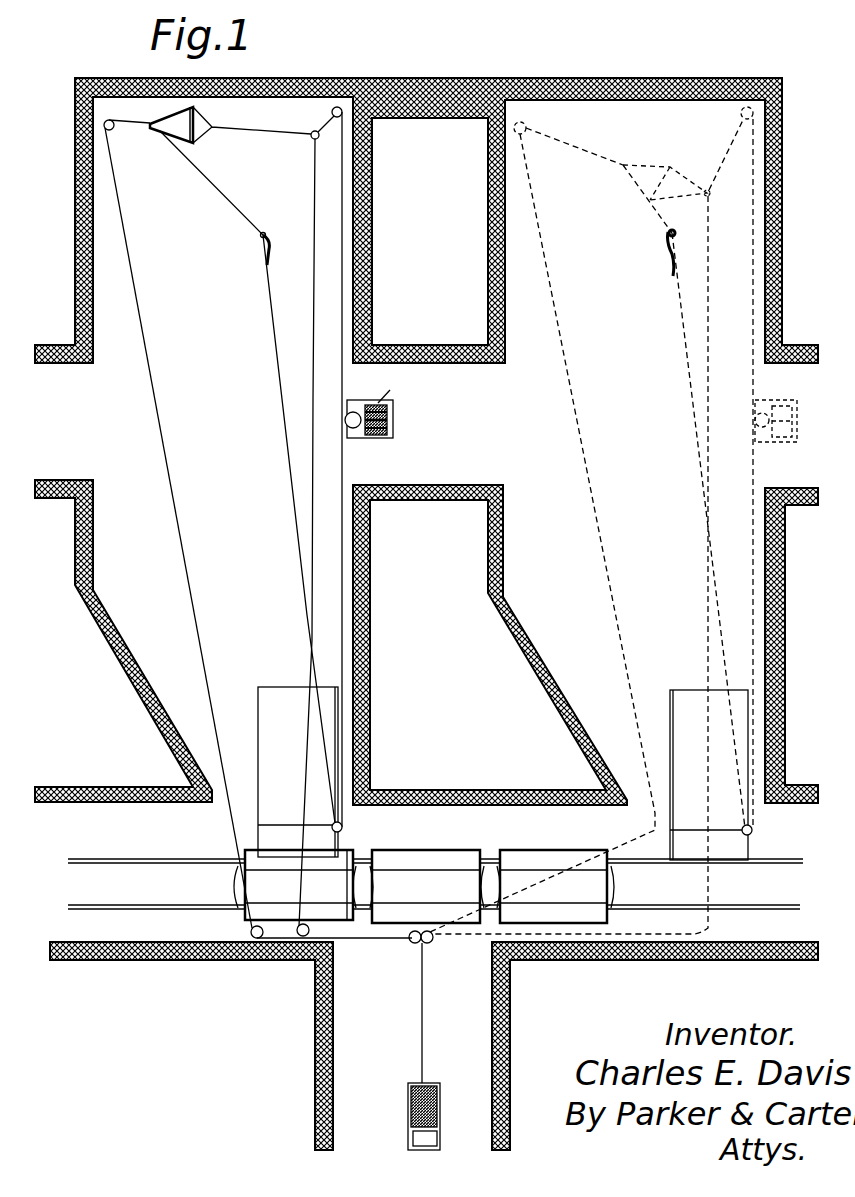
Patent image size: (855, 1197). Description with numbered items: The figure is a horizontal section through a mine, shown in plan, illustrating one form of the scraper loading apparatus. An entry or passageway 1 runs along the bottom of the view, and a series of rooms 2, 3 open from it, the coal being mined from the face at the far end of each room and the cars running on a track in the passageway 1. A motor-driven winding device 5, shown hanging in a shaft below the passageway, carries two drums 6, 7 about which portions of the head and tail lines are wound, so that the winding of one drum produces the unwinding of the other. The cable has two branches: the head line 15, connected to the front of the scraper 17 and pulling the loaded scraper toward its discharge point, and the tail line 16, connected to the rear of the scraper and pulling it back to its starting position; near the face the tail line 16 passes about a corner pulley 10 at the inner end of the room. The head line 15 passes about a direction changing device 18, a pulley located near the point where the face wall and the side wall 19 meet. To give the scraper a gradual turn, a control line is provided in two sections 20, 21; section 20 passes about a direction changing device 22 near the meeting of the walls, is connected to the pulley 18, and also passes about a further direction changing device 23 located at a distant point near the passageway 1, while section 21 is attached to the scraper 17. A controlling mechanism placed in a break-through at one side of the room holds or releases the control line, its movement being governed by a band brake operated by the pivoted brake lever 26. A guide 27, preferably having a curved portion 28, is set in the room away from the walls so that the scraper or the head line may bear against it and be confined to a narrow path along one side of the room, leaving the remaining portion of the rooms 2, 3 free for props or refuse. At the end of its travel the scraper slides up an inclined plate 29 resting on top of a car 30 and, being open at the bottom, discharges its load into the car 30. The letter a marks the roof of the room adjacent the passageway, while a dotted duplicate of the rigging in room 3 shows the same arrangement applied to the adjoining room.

The entry or passageway 1 is at (434, 982).
The room 2 is at (140, 641).
The room 3 is at (585, 621).
The winding device 5 is at (412, 1116).
The drum 6 is at (432, 1085).
The drum 7 is at (410, 1122).
The pulley 10 is at (113, 130).
The head line 15 is at (313, 264).
The tail line 16 is at (135, 124).
The scraper 17 is at (195, 143).
The direction changing device 18 is at (311, 140).
The wall 19 is at (343, 175).
The control line section 20 is at (343, 320).
The control line section 21 is at (270, 345).
The direction changing device 22 is at (343, 112).
The direction changing device 23 is at (343, 827).
The brake lever 26 is at (266, 236).
The guide 27 is at (258, 258).
The curved portion 28 is at (393, 386).
The inclined plate 29 is at (268, 686).
The car 30 is at (244, 855).
The roof a is at (247, 97).